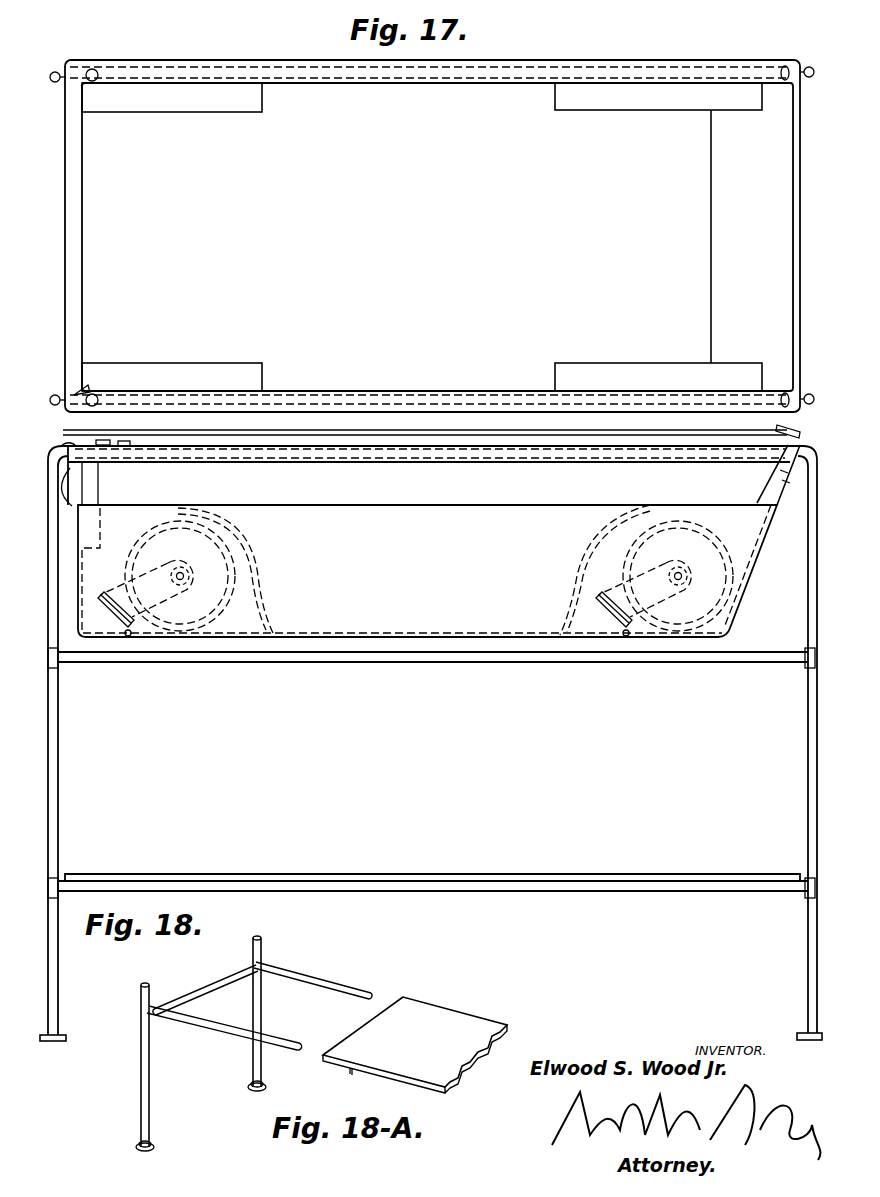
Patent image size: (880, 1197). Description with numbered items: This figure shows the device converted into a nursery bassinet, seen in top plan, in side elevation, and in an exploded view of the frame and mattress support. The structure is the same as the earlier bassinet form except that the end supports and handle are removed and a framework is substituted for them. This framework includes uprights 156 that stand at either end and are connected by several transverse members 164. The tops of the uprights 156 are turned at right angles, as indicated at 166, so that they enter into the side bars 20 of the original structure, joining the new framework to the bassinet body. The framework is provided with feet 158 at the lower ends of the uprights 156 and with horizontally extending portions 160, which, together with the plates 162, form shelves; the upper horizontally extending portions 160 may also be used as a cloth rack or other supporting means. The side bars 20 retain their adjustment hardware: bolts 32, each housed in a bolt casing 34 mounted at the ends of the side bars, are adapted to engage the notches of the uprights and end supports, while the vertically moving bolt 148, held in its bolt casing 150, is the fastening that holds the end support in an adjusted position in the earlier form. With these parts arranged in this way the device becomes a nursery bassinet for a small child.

In FIG. 17, the lower side bar 20 is at (417, 82).
In FIG. 17, the bolt 32 is at (101, 441).
In FIG. 17, the bolt casing 34 is at (130, 442).
In FIG. 17, the vertically moving bolt 148 is at (98, 501).
In FIG. 17, the bolt casing 150 is at (90, 486).
In FIG. 17, the upright 156 is at (58, 996).
In FIG. 18, the upright 156 is at (262, 958).
In FIG. 17, the foot 158 is at (55, 70).
In FIG. 18, the foot 158 is at (252, 1090).
In FIG. 17, the horizontally extending portion 160 is at (505, 663).
In FIG. 18, the horizontally extending portion 160 is at (330, 1000).
In FIG. 18A, the plate 162 is at (415, 1045).
In FIG. 17, the transverse member 164 is at (60, 668).
In FIG. 17, the right-angled top 166 is at (88, 385).